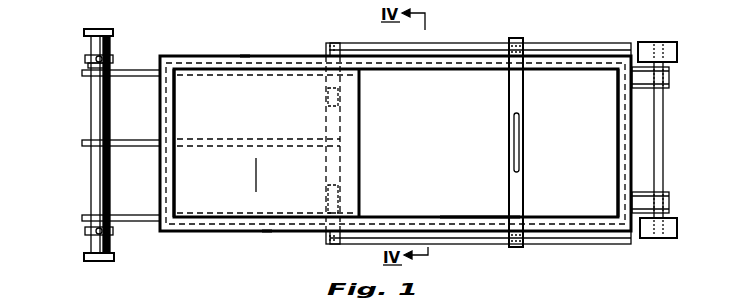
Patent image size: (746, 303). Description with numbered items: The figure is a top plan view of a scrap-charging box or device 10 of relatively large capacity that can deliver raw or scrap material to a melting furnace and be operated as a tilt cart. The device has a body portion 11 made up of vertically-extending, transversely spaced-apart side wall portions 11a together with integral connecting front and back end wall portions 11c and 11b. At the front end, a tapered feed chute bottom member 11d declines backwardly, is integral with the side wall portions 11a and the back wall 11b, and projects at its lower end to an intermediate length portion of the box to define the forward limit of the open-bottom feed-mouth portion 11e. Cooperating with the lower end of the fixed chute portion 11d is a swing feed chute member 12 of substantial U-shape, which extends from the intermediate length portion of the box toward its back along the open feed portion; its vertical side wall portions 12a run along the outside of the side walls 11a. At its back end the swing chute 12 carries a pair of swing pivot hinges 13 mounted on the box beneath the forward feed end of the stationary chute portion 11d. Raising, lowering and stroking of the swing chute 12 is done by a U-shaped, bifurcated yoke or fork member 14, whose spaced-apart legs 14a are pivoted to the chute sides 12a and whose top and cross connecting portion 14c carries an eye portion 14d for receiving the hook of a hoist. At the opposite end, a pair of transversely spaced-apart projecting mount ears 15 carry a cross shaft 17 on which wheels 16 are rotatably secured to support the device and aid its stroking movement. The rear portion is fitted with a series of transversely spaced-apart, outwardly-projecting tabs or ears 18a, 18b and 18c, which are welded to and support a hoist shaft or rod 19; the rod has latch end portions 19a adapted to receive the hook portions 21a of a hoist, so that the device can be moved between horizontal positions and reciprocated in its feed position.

The charging box device 10 is at (441, 128).
The body portion 11 is at (218, 232).
The side wall portions 11a is at (246, 56).
The back end wall portion 11b is at (176, 110).
The front end wall portion 11c is at (620, 115).
The tapered feed chute bottom member 11d is at (361, 160).
The open-bottom feed-mouth portion 11e is at (483, 204).
The swing feed chute member 12 is at (472, 243).
The vertical side wall portions 12a is at (582, 44).
The swing pivot hinges 13 is at (325, 50).
The yoke or fork member 14 is at (524, 93).
The legs 14a is at (516, 248).
The top and cross connecting portion 14c is at (524, 190).
The eye portion 14d is at (521, 160).
The mount ears 15 is at (670, 78).
The wheels 16 is at (677, 46).
The cross shaft 17 is at (665, 150).
The tab or ear 18a is at (154, 215).
The tab or ear 18b is at (152, 140).
The tab or ear 18c is at (152, 70).
The hoist shaft or rod 19 is at (91, 166).
The latch end portions 19a is at (104, 30).
The hook portions 21a is at (85, 62).